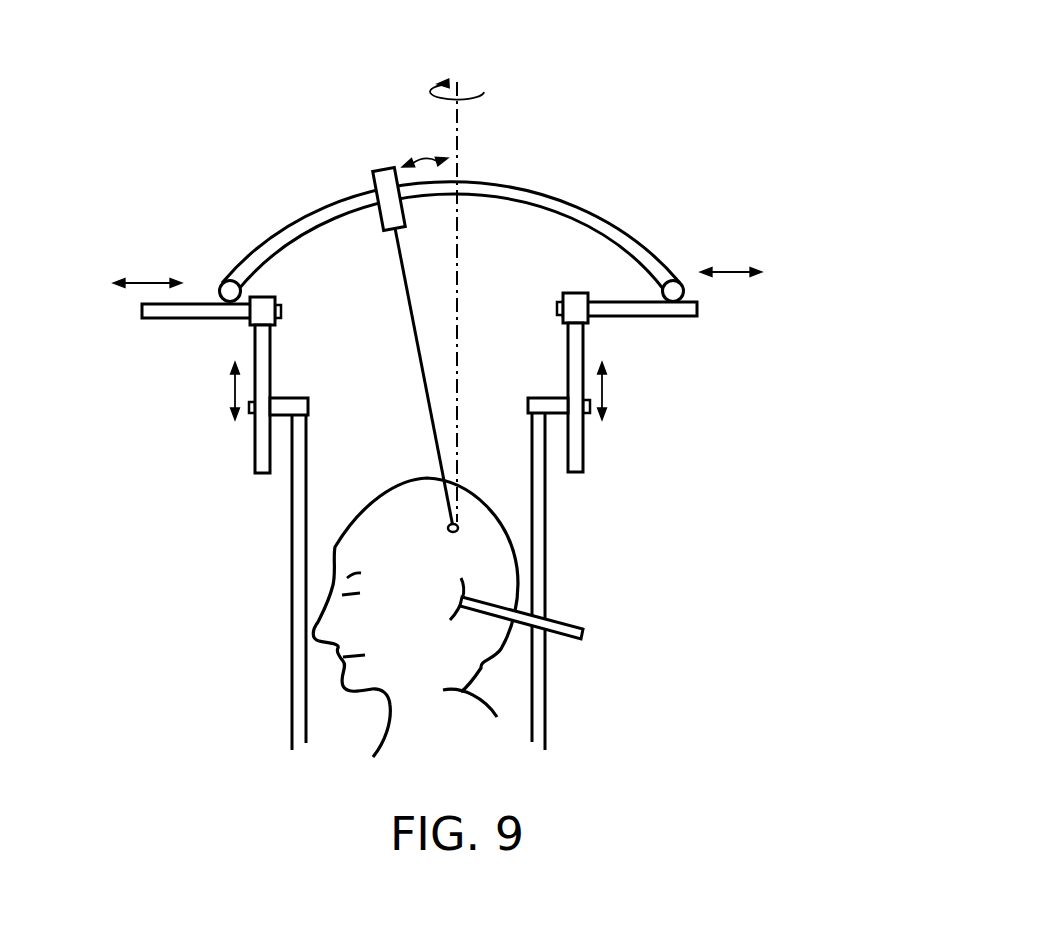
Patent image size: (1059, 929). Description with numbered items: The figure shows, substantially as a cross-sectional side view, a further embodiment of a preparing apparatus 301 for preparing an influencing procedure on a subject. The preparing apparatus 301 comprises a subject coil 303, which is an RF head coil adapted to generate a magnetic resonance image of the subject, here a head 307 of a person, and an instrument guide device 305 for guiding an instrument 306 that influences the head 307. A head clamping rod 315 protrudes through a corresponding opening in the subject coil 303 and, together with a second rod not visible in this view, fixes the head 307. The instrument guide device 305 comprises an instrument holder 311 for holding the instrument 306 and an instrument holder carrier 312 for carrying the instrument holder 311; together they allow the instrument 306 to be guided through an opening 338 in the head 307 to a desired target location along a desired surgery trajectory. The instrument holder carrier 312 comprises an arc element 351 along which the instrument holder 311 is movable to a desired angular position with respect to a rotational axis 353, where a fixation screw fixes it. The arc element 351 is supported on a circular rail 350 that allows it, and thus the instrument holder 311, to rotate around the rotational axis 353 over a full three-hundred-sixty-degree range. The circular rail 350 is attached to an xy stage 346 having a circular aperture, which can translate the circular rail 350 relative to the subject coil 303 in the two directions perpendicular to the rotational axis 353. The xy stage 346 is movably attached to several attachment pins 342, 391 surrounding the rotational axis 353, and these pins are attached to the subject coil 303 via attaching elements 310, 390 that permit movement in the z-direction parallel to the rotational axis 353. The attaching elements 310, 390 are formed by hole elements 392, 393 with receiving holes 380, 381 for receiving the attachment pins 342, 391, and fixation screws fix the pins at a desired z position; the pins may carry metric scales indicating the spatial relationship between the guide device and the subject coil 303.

The preparing apparatus 301 is at (466, 387).
The instrument guide device 305 is at (466, 399).
The arc element 351 is at (465, 214).
The instrument holder carrier 312 is at (442, 212).
The instrument holder 311 is at (351, 186).
The instrument 306 is at (390, 377).
The rotational axis 353 is at (495, 302).
The circular rail 350 is at (484, 264).
The xy stage 346 is at (420, 343).
The receiving hole 380 is at (288, 344).
The receiving hole 381 is at (547, 341).
The attachment pin 342 is at (219, 421).
The attachment pin 391 is at (613, 406).
The hole element 392 is at (314, 382).
The hole element 393 is at (526, 381).
The attaching element 310 is at (273, 582).
The subject coil 303 is at (575, 581).
The attaching element 390 is at (574, 477).
The head 307 is at (360, 617).
The opening 338 is at (320, 584).
The head clamping rod 315 is at (545, 609).